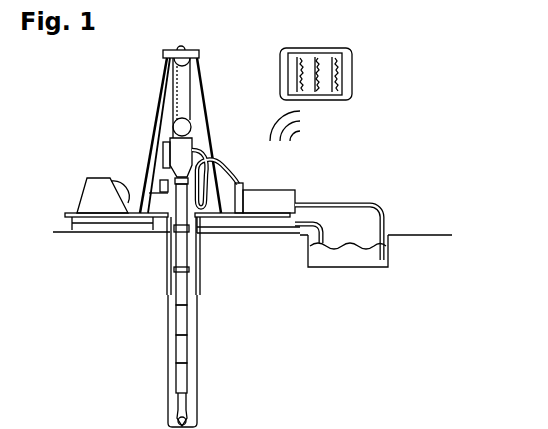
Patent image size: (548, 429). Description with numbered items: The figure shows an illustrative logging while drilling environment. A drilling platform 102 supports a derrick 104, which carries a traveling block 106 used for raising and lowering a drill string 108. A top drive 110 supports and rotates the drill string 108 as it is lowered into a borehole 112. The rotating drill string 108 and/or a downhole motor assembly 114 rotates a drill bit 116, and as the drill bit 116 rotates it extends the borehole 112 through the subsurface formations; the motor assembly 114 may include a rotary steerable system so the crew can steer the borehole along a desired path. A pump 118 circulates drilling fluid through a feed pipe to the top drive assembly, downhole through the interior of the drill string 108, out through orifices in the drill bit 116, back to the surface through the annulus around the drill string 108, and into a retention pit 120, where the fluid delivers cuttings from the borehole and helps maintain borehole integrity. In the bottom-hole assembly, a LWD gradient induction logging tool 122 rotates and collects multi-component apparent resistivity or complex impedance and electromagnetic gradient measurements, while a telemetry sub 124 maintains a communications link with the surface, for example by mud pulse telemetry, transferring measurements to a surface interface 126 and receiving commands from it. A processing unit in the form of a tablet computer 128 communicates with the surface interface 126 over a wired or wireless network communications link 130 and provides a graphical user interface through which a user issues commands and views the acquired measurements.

The drilling platform 102 is at (65, 218).
The derrick 104 is at (166, 68).
The traveling block 106 is at (173, 125).
The drill string 108 is at (176, 298).
The top drive 110 is at (176, 147).
The borehole 112 is at (170, 333).
The downhole motor assembly 114 is at (176, 384).
The drill bit 116 is at (178, 418).
The pump 118 is at (296, 198).
The retention pit 120 is at (308, 256).
The LWD gradient induction logging tool 122 is at (176, 360).
The telemetry sub 124 is at (190, 319).
The surface interface 126 is at (242, 186).
The tablet computer 128 is at (281, 70).
The network communications link 130 is at (297, 135).